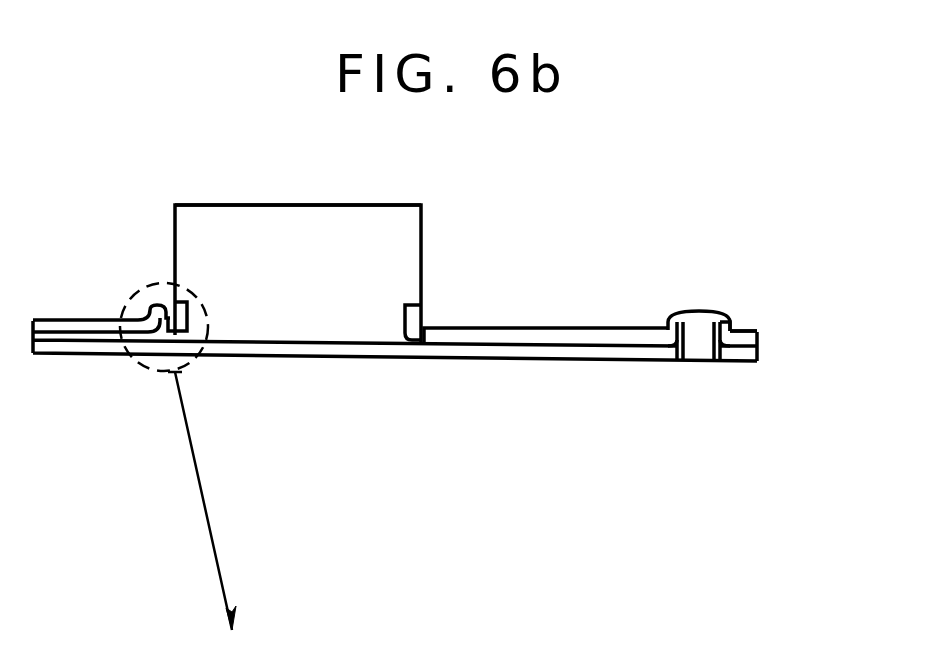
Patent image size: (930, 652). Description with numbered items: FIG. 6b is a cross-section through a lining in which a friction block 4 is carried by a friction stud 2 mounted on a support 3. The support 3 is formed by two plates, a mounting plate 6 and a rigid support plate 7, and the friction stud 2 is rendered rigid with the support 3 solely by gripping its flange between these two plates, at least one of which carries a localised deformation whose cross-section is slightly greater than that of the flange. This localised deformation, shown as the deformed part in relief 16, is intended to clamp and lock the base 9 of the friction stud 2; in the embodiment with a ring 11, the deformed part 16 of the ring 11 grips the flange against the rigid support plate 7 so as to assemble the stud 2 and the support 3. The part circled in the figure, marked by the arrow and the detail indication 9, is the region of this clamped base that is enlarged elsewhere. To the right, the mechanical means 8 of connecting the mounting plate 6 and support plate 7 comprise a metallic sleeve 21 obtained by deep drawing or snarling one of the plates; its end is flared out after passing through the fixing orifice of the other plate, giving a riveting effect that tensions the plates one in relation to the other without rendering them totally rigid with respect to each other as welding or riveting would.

The friction stud 2 is at (435, 217).
The support 3 is at (545, 320).
The friction block 4 is at (298, 228).
The mounting plate 6 is at (600, 338).
The rigid support plate 7 is at (617, 362).
The mechanical means of connecting the mounting and support plates 8 is at (748, 327).
The base of the friction stud 9 is at (198, 335).
The ring 11 is at (158, 303).
The deformed part in relief 16 is at (146, 300).
The metallic sleeve 21 is at (725, 320).